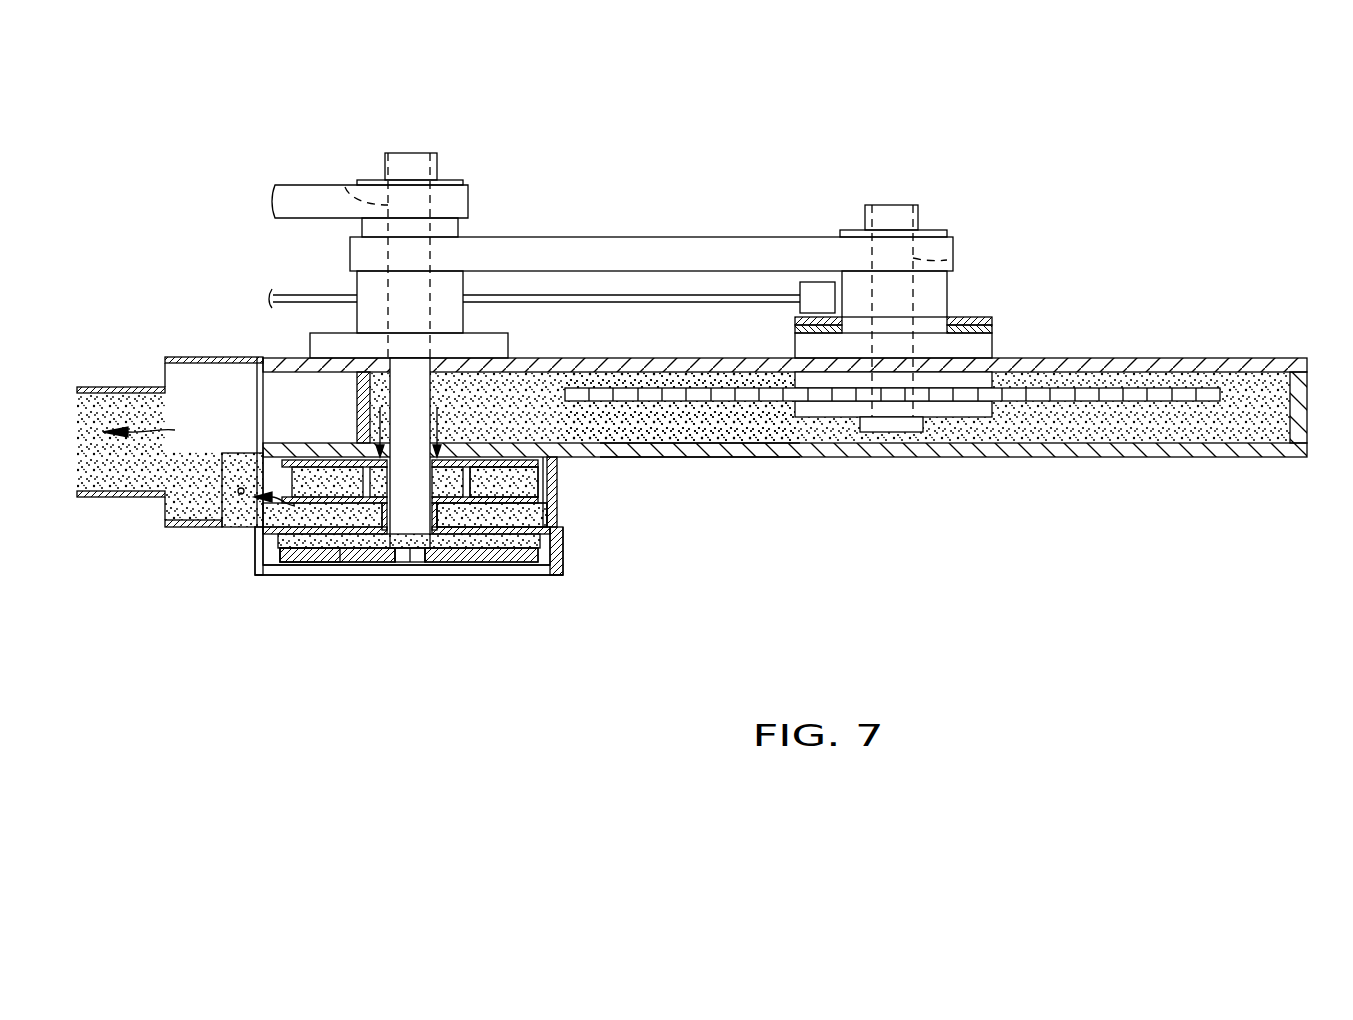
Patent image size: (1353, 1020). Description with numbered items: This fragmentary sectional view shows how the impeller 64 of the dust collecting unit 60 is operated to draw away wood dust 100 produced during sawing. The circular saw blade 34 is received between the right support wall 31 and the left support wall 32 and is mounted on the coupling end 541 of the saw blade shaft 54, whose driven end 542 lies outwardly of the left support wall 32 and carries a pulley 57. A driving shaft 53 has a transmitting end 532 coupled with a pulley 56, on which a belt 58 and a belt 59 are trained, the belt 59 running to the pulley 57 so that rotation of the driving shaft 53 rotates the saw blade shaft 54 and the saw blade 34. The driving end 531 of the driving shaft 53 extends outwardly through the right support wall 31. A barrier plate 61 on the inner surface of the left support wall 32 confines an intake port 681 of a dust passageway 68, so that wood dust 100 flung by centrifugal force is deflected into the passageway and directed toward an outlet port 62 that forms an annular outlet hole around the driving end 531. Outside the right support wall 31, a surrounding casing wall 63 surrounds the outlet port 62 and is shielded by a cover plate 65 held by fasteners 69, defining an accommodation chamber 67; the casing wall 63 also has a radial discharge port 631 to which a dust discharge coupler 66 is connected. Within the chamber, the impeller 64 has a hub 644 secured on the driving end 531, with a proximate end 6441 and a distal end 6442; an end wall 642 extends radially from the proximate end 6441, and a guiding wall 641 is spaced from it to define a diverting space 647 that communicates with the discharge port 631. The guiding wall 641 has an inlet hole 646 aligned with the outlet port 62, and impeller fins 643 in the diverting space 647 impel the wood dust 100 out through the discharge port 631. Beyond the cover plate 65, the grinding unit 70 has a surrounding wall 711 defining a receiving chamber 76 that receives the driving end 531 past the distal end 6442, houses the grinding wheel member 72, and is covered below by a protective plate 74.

The right support wall 31 is at (1220, 450).
The left support wall 32 is at (1248, 358).
The circular saw blade 34 is at (1100, 390).
The driving shaft 53 is at (407, 160).
The driving end 531 is at (345, 400).
The transmitting end 532 is at (345, 187).
The saw blade shaft 54 is at (892, 215).
The coupling end 541 is at (942, 433).
The driven end 542 is at (947, 260).
The pulley 56 is at (457, 173).
The pulley 57 is at (937, 232).
The belt 58 is at (318, 193).
The belt 59 is at (515, 250).
The dust collecting unit 60 is at (170, 352).
The barrier plate 61 is at (1300, 400).
The outlet port 62 is at (465, 460).
The surrounding casing wall 63 is at (555, 495).
The discharge port 631 is at (262, 502).
The impeller 64 is at (553, 480).
The guiding wall 641 is at (487, 520).
The end wall 642 is at (458, 560).
The impeller fins 643 is at (262, 476).
The hub 644 is at (362, 557).
The proximate end 6441 is at (320, 560).
The distal end 6442 is at (383, 567).
The inlet hole 646 is at (500, 478).
The diverting space 647 is at (488, 562).
The cover plate 65 is at (560, 543).
The dust discharge coupler 66 is at (217, 357).
The accommodation chamber 67 is at (553, 518).
The dust passageway 68 is at (787, 457).
The intake port 681 is at (1263, 413).
The fasteners 69 is at (555, 462).
The grinding unit 70 is at (515, 585).
The surrounding wall 711 is at (252, 548).
The grinding wheel member 72 is at (557, 555).
The protective plate 74 is at (408, 568).
The receiving chamber 76 is at (275, 563).
The wood dust 100 is at (737, 457).